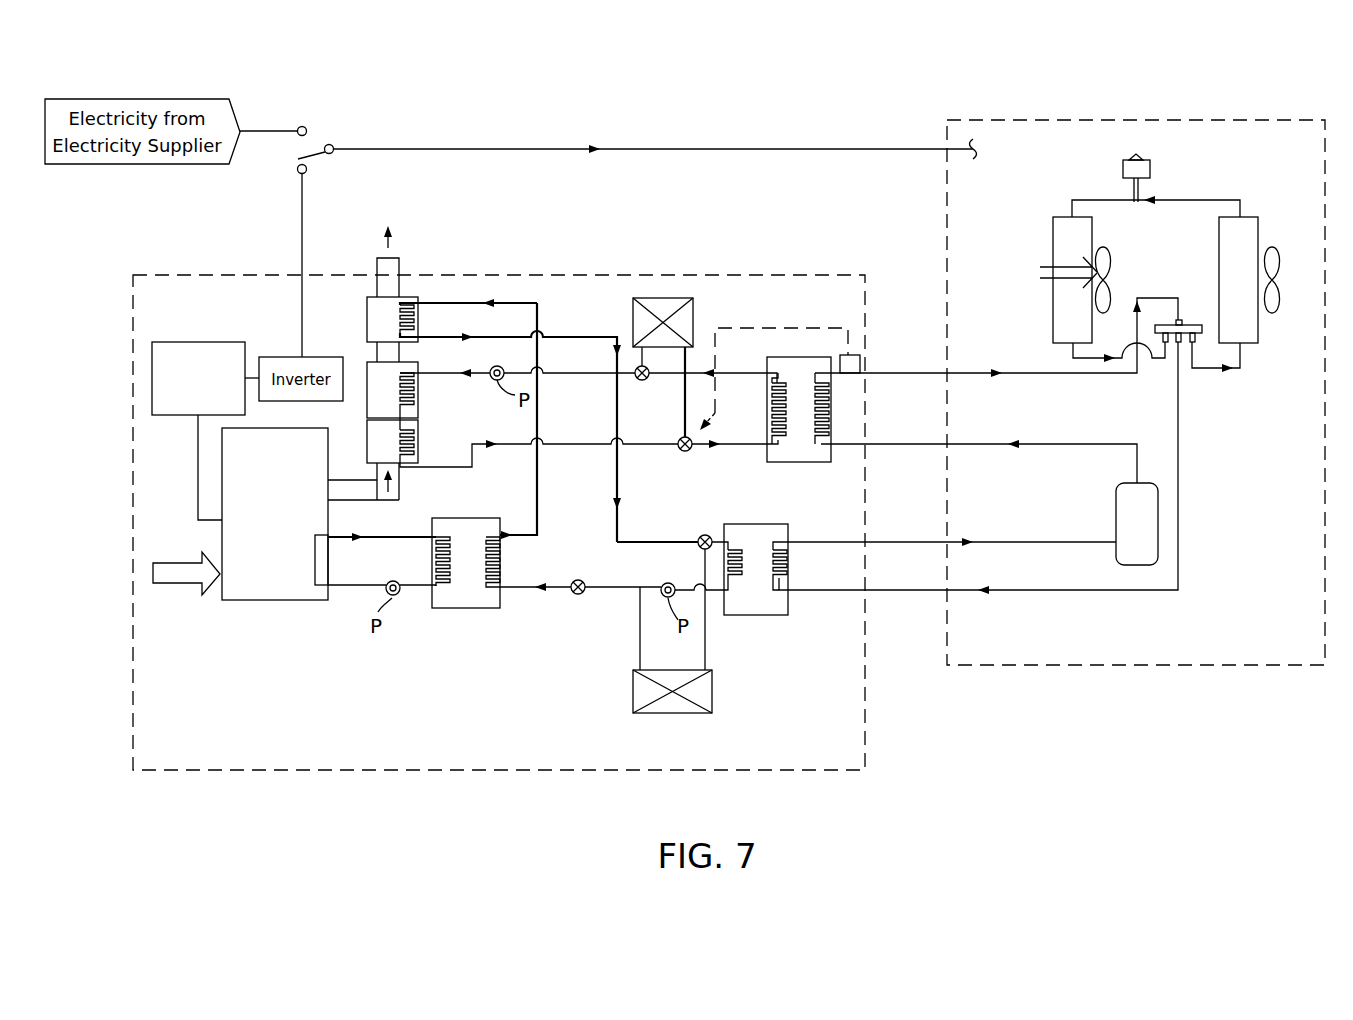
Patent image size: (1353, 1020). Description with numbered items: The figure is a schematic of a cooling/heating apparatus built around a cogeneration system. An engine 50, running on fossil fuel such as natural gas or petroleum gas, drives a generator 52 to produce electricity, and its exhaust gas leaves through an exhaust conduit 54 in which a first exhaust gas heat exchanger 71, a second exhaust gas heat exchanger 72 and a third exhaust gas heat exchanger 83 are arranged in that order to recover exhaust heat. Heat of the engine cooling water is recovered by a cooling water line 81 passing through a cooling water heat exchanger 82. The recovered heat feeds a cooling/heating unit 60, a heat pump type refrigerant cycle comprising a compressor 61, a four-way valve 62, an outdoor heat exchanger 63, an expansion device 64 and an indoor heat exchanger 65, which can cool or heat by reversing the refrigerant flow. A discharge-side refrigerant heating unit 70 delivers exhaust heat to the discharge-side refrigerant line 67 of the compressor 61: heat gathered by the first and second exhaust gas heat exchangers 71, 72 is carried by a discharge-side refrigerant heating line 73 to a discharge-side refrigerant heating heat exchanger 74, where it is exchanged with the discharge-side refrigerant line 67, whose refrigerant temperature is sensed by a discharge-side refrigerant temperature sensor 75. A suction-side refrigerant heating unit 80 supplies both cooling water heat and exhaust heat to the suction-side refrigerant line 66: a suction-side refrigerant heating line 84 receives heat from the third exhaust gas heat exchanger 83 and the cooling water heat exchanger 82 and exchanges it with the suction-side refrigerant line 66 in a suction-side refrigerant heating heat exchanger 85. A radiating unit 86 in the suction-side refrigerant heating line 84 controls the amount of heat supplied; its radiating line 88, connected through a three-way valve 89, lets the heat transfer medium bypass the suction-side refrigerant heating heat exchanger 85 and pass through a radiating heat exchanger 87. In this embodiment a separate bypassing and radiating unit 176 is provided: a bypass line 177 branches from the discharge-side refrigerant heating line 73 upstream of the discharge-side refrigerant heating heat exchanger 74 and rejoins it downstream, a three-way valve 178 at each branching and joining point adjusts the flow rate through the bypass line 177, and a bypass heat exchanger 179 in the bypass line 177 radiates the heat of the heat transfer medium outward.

The engine 50 is at (258, 588).
The generator 52 is at (215, 352).
The exhaust conduit 54 is at (388, 352).
The cooling/heating unit 60 is at (1122, 108).
The compressor 61 is at (1150, 547).
The 4-way valve 62 is at (1193, 345).
The outdoor heat exchanger 63 is at (1068, 225).
The expansion device 64 is at (1143, 170).
The indoor heat exchanger 65 is at (1252, 257).
The suction-side refrigerant line 66 is at (958, 592).
The discharge-side refrigerant line 67 is at (975, 370).
The discharge-side refrigerant heating unit 70 is at (583, 462).
The first exhaust gas heat exchanger 71 is at (418, 430).
The second exhaust gas heat exchanger 72 is at (418, 385).
The discharge-side refrigerant heating line 73 is at (437, 368).
The discharge-side refrigerant heating heat exchanger 74 is at (797, 460).
The discharge-side refrigerant temperature sensor 75 is at (855, 355).
The suction-side refrigerant heating unit 80 is at (558, 606).
The cooling water line 81 is at (357, 585).
The cooling water heat exchanger 82 is at (458, 600).
The third exhaust gas heat exchanger 83 is at (408, 300).
The suction-side refrigerant heating line 84 is at (575, 337).
The suction-side refrigerant heating heat exchanger 85 is at (778, 608).
The radiating unit 86 is at (718, 661).
The radiating heat exchanger 87 is at (690, 708).
The radiating line 88 is at (707, 637).
The 3-way valve 89 is at (700, 547).
The bypassing and radiating unit 176 is at (712, 309).
The bypass line 177 is at (687, 362).
The 3-way valve 178 is at (695, 452).
The bypass heat exchanger 179 is at (675, 300).